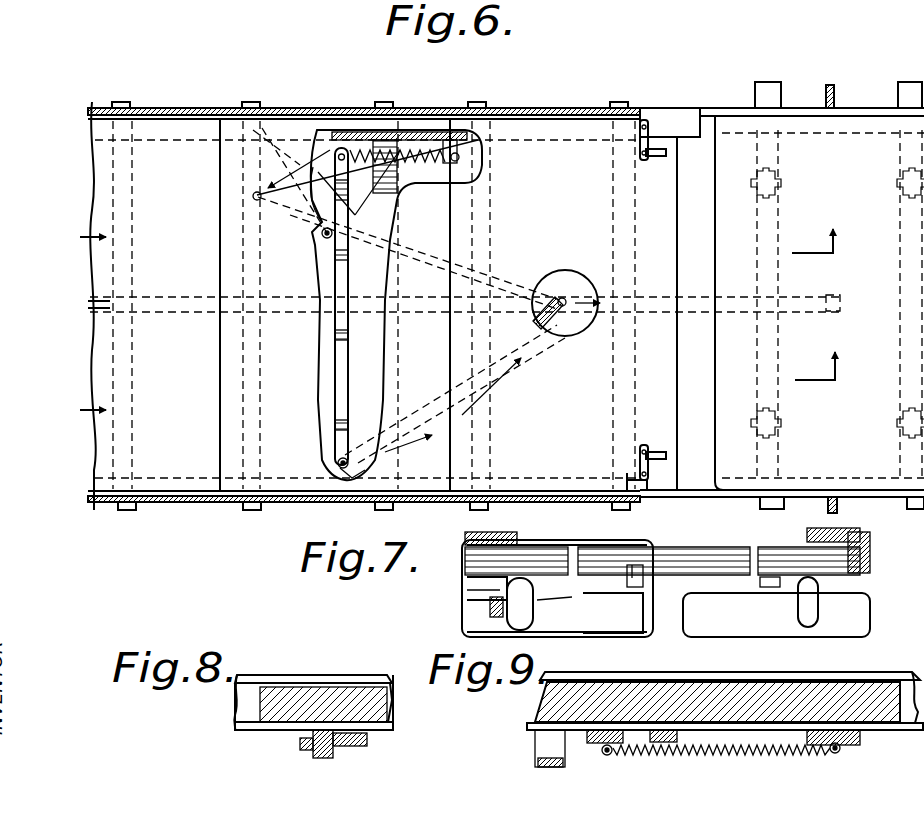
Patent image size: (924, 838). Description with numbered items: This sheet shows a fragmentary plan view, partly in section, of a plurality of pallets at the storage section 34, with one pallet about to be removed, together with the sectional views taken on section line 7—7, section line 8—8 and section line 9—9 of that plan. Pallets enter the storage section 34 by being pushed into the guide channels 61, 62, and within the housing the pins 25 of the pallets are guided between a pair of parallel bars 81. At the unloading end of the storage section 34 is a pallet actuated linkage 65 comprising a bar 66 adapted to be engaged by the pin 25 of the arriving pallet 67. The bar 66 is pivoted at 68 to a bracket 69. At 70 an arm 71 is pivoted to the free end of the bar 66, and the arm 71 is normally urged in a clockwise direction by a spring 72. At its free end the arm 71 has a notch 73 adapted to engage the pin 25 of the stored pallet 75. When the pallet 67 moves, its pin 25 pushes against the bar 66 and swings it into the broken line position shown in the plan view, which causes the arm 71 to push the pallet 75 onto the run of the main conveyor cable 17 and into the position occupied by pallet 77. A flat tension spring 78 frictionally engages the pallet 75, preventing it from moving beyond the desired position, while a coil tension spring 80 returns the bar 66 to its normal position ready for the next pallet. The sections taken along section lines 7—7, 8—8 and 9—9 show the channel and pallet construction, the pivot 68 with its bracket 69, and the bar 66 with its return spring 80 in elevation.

In FIG. 6, the section line 7— 7 is at (640, 112).
In FIG. 6, the section line 8— 8 is at (307, 237).
In FIG. 6, the section line 9— 9 is at (250, 158).
In FIG. 6, the cable 17 is at (830, 95).
In FIG. 6, the pin 25 is at (312, 318).
In FIG. 7, the pin 25 is at (675, 638).
In FIG. 6, the storage section 34 is at (545, 108).
In FIG. 7, the guide channel 61 is at (466, 532).
In FIG. 7, the guide channel 62 is at (860, 532).
In FIG. 6, the pallet actuated linkage 65 is at (334, 404).
In FIG. 6, the bar 66 is at (470, 242).
In FIG. 9, the bar 66 is at (604, 730).
In FIG. 6, the pallet 67 is at (304, 454).
In FIG. 6, the pivot 68 is at (322, 232).
In FIG. 8, the pivot 68 is at (310, 750).
In FIG. 6, the bracket 69 is at (398, 198).
In FIG. 9, the bracket 69 is at (534, 746).
In FIG. 6, the pivot 70 is at (330, 466).
In FIG. 6, the arm 71 is at (636, 288).
In FIG. 6, the spring 72 is at (345, 494).
In FIG. 6, the notch 73 is at (560, 290).
In FIG. 6, the pallet 75 is at (563, 410).
In FIG. 7, the pallet 75 is at (636, 546).
In FIG. 8, the pallet 75 is at (327, 686).
In FIG. 9, the pallet 75 is at (848, 682).
In FIG. 6, the pallet 77 is at (838, 188).
In FIG. 6, the flat tension spring 78 is at (655, 160).
In FIG. 7, the flat tension spring 78 is at (540, 520).
In FIG. 6, the coil tension spring 80 is at (392, 166).
In FIG. 9, the coil tension spring 80 is at (758, 750).
In FIG. 6, the parallel bars 81 is at (695, 300).
In FIG. 7, the parallel bars 81 is at (630, 612).